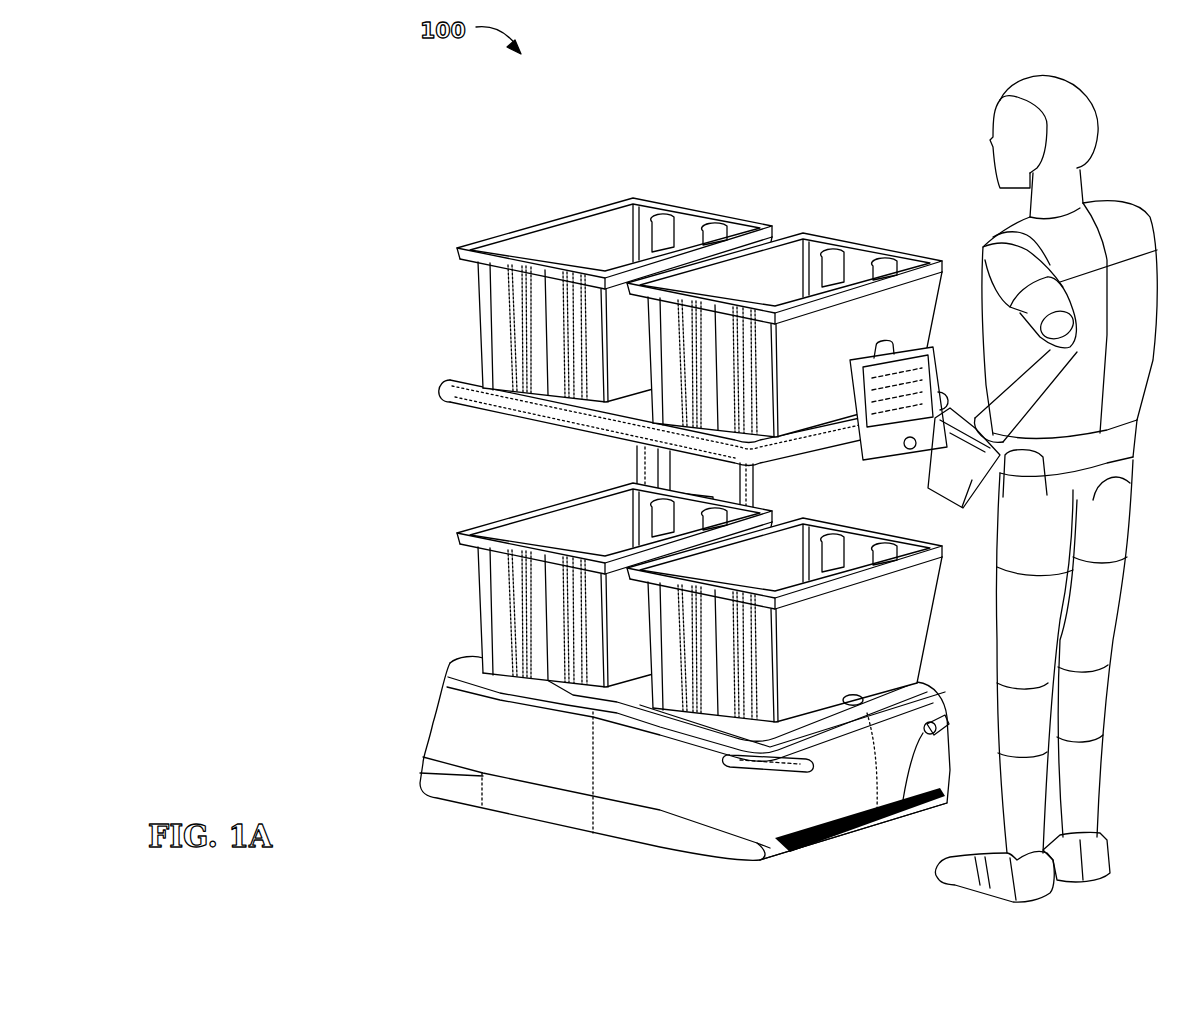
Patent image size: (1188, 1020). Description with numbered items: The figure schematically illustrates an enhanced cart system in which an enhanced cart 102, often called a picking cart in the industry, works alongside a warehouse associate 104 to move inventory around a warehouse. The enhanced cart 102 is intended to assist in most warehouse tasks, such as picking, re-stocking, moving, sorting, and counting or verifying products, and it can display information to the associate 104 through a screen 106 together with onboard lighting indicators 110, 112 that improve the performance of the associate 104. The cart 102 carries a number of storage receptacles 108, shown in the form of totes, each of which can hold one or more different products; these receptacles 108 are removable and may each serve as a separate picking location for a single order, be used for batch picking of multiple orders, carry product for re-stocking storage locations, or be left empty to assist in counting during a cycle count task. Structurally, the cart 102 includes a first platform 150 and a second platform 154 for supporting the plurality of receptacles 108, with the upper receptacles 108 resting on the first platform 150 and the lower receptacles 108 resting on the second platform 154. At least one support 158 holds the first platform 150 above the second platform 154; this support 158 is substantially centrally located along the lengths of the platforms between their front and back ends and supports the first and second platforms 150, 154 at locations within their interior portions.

The enhanced cart 102 is at (578, 758).
The warehouse associate 104 is at (982, 190).
The screen 106 is at (878, 473).
The storage receptacle 108 is at (498, 233).
The lighting indicator 110 is at (740, 770).
The lighting indicator 112 is at (478, 370).
The first platform 150 is at (560, 405).
The second platform 154 is at (617, 690).
The support 158 is at (635, 497).